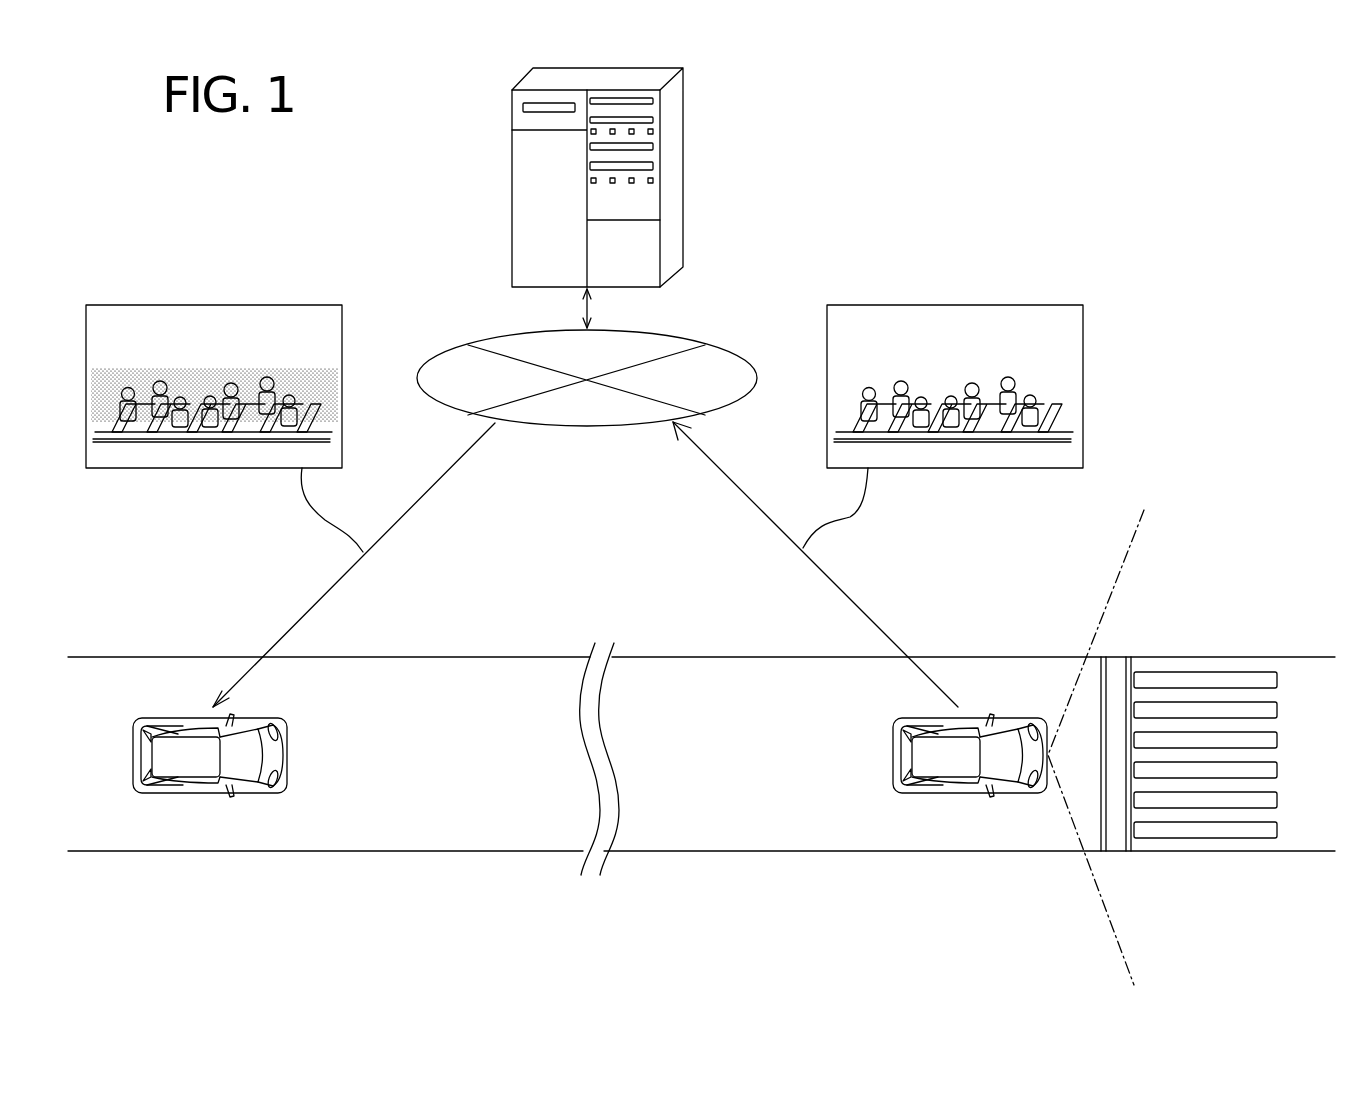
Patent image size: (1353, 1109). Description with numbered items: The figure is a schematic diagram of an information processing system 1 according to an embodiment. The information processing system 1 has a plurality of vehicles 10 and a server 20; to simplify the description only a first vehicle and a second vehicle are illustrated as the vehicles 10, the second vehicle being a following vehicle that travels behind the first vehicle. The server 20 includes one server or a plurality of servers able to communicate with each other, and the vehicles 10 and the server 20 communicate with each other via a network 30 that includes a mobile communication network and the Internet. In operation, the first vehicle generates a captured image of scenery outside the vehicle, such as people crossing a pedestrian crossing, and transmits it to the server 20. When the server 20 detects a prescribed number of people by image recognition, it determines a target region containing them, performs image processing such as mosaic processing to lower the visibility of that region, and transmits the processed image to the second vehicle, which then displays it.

The information processing system 1 is at (1058, 159).
The vehicle 10 is at (178, 793).
The server 20 is at (512, 150).
The network 30 is at (528, 427).